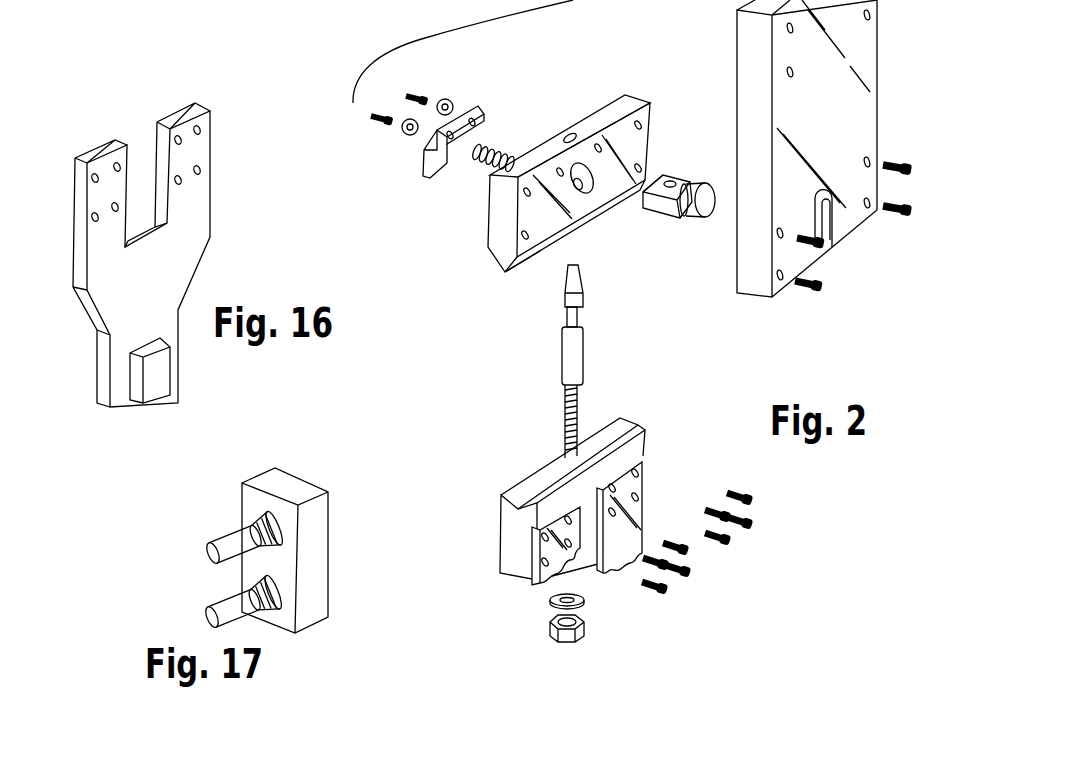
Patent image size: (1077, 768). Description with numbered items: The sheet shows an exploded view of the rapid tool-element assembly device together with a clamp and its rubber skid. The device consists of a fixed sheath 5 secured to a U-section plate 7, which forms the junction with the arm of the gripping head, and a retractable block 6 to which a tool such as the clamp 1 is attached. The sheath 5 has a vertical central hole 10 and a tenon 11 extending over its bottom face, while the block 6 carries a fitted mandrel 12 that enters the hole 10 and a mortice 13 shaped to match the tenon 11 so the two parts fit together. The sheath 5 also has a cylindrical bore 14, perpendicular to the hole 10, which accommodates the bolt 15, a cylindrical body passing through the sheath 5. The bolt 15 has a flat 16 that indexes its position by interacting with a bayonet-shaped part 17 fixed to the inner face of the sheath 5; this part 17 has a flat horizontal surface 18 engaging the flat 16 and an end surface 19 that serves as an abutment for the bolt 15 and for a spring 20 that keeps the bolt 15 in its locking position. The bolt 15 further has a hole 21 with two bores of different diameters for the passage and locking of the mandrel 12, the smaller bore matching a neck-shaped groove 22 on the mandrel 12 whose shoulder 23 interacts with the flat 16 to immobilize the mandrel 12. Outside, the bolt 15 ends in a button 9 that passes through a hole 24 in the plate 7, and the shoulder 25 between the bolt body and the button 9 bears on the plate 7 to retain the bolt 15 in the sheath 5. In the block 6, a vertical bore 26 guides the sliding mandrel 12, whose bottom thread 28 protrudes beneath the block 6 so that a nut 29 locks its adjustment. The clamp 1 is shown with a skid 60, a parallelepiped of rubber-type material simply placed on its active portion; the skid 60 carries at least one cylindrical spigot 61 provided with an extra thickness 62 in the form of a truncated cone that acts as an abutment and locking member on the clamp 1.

In FIG. 16, the clamp 1 is at (205, 270).
In FIG. 2, the clamp 1 is at (643, 503).
In FIG. 2, the sheath 5 is at (613, 108).
In FIG. 2, the block 6 is at (517, 545).
In FIG. 2, the U-section plate 7 is at (855, 40).
In FIG. 2, the button 9 is at (709, 216).
In FIG. 2, the vertical central hole 10 is at (566, 134).
In FIG. 2, the tenon 11 is at (532, 260).
In FIG. 2, the mandrel 12 is at (556, 348).
In FIG. 2, the mortice 13 is at (528, 482).
In FIG. 2, the cylindrical bore 14 is at (588, 182).
In FIG. 2, the bolt 15 is at (657, 212).
In FIG. 2, the flat 16 is at (648, 190).
In FIG. 2, the bayonet-shaped part 17 is at (413, 168).
In FIG. 2, the flat horizontal surface 18 is at (477, 141).
In FIG. 2, the end surface 19 is at (442, 180).
In FIG. 2, the spring 20 is at (476, 164).
In FIG. 2, the hole 21 is at (688, 174).
In FIG. 2, the groove 22 is at (580, 314).
In FIG. 2, the shoulder 23 is at (563, 311).
In FIG. 2, the hole 24 is at (822, 196).
In FIG. 2, the shoulder 25 is at (686, 219).
In FIG. 2, the vertical bore 26 is at (563, 453).
In FIG. 2, the thread 28 is at (580, 413).
In FIG. 2, the nut 29 is at (552, 628).
In FIG. 16, the skid 60 is at (160, 357).
In FIG. 17, the skid 60 is at (300, 489).
In FIG. 17, the cylindrical spigot 61 is at (200, 616).
In FIG. 17, the extra thickness 62 is at (245, 530).